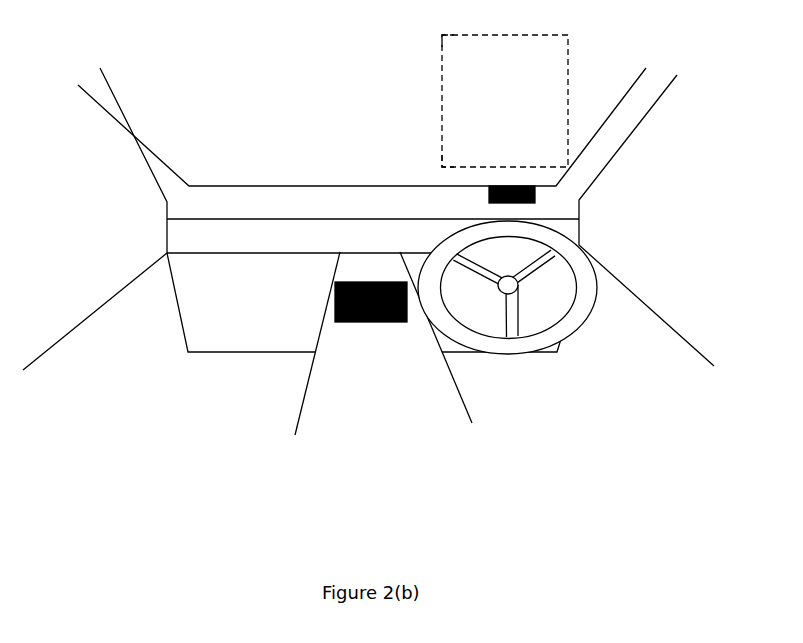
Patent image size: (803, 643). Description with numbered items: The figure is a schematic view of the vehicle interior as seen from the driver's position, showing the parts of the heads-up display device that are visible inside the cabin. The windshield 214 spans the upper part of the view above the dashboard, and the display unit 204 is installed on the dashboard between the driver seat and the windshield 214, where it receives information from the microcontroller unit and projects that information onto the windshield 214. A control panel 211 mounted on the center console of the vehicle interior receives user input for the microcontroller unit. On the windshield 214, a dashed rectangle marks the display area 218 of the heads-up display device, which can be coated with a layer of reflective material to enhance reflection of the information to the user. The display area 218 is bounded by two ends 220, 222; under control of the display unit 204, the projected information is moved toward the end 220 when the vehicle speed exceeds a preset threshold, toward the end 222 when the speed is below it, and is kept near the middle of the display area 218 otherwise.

The display unit 204 is at (535, 193).
The control panel 211 is at (335, 320).
The windshield 214 is at (185, 117).
The display area 218 is at (545, 78).
The end of the display area 220 is at (438, 35).
The end of the display area 222 is at (438, 167).